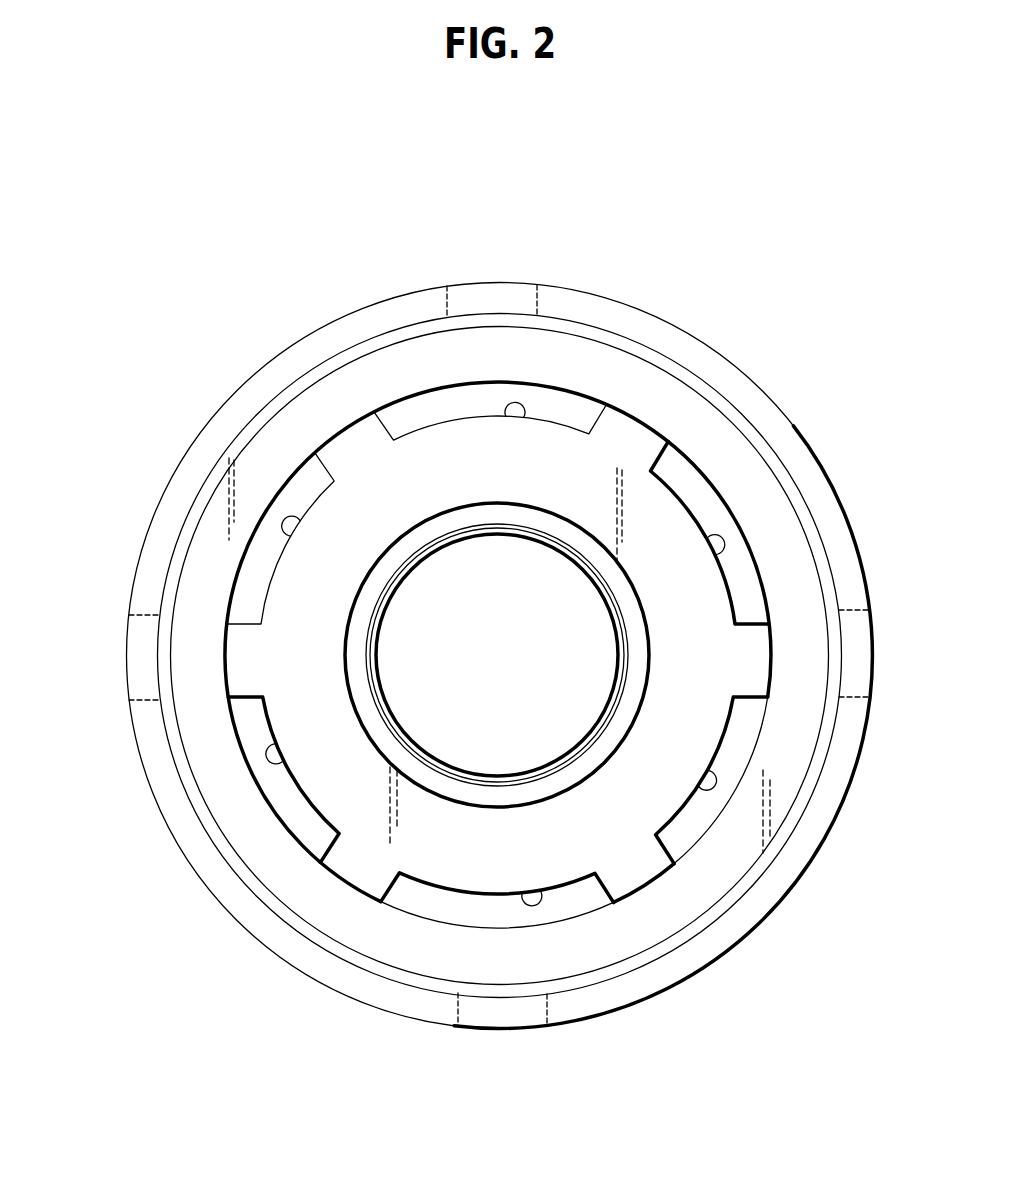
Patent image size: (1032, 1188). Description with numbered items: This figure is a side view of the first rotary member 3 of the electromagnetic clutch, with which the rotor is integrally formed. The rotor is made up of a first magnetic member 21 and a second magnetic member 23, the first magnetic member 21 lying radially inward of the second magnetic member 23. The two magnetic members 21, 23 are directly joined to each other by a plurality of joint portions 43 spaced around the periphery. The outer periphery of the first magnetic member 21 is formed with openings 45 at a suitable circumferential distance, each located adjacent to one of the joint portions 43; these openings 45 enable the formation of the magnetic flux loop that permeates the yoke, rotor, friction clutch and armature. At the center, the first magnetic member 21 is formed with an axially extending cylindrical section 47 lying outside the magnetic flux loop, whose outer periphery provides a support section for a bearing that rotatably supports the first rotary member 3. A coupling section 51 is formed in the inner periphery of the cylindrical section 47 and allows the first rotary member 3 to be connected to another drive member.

The first rotary member 3 is at (660, 316).
The first magnetic member 21 is at (693, 733).
The second magnetic member 23 is at (768, 518).
The joint portions 43 is at (340, 425).
The openings 45 is at (510, 418).
The cylindrical section 47 is at (545, 518).
The coupling section 51 is at (393, 595).